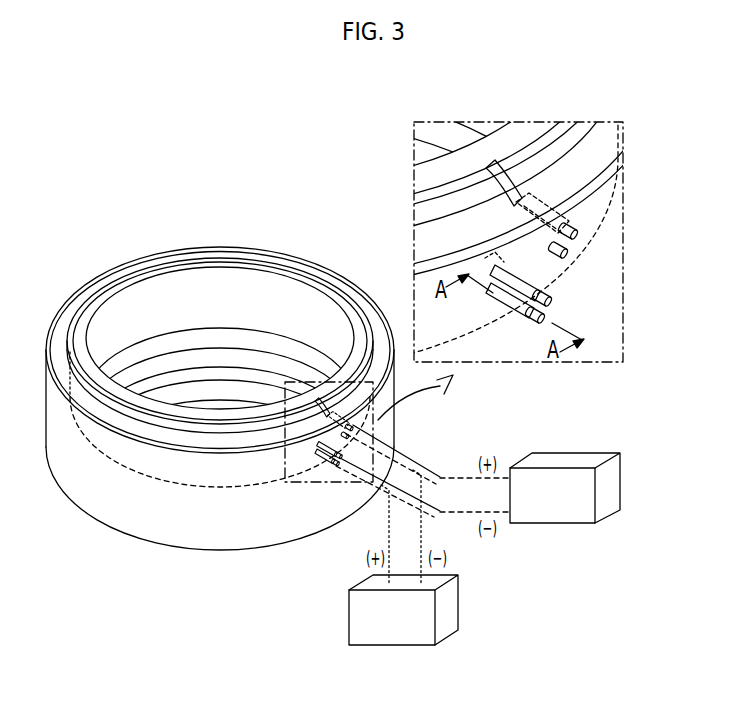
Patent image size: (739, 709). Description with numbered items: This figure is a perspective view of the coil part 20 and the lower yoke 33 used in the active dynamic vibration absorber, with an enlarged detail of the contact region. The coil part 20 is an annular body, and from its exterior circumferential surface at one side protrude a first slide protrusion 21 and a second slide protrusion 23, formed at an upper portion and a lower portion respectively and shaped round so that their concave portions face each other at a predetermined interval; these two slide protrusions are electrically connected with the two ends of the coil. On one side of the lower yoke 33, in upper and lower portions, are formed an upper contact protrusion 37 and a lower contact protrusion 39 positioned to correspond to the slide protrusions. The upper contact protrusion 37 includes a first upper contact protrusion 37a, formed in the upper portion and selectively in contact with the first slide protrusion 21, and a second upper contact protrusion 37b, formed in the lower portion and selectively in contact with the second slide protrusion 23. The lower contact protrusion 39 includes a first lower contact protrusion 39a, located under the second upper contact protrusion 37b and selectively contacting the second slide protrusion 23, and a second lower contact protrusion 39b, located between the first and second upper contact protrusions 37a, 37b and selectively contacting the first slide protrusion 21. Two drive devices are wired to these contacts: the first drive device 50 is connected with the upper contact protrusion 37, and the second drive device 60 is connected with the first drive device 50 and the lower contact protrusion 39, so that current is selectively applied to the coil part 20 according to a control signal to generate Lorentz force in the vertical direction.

The coil part 20 is at (222, 248).
The first slide protrusion 21 is at (496, 164).
The second slide protrusion 23 is at (438, 230).
The lower yoke 33 is at (205, 551).
The upper contact protrusion 37 is at (676, 228).
The first upper contact protrusion 37a is at (578, 230).
The second upper contact protrusion 37b is at (550, 292).
The lower contact protrusion 39 is at (550, 404).
The first lower contact protrusion 39a is at (540, 318).
The second lower contact protrusion 39b is at (504, 285).
The first drive device 50 is at (620, 483).
The second drive device 60 is at (458, 603).